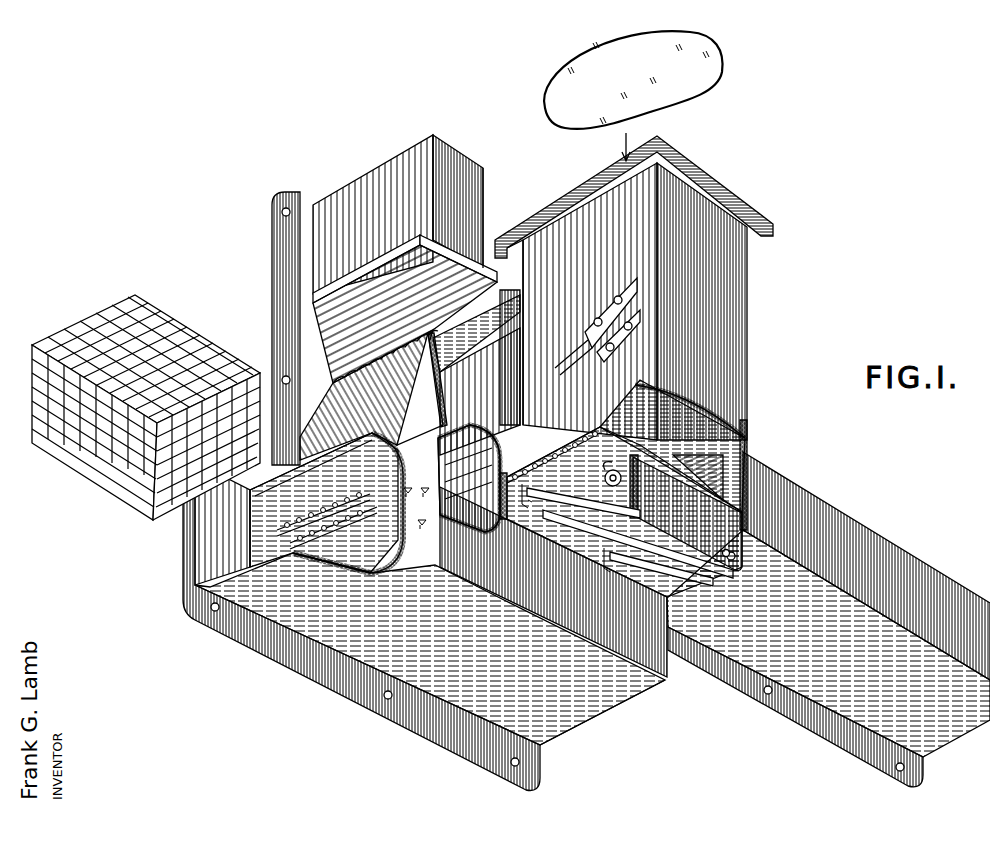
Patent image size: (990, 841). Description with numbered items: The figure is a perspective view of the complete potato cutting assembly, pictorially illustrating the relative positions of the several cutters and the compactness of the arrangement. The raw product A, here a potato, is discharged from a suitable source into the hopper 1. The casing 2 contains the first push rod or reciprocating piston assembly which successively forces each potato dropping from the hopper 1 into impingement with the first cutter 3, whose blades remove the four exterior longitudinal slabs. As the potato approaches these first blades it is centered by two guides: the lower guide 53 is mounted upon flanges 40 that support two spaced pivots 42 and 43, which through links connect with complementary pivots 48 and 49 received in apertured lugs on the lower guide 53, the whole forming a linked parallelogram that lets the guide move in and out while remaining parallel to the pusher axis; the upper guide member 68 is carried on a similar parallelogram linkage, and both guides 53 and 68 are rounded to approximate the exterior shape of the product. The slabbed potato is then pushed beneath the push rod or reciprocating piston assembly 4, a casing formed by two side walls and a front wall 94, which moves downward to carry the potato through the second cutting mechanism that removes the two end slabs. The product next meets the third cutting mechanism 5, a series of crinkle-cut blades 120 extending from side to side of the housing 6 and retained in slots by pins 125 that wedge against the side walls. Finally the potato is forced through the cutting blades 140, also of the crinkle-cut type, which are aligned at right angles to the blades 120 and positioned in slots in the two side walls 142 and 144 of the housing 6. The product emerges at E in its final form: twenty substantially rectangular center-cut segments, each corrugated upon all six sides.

The hopper 1 is at (760, 310).
The casing 2 is at (868, 511).
The first cutter 3 is at (555, 365).
The push rod or reciprocating piston assembly 4 is at (372, 166).
The third cutting mechanism 5 is at (466, 405).
The housing 6 is at (635, 710).
The flanges 40 is at (735, 555).
The pin or pivot 42 is at (605, 522).
The pin or pivot 43 is at (680, 575).
The pivot 48 is at (562, 502).
The pivot / lug 49 is at (668, 510).
The lower guide 53 is at (600, 481).
The upper guide member 68 is at (672, 446).
The front wall 94 is at (480, 185).
The blades 120 is at (469, 478).
The pins 125 is at (428, 526).
The cutting blades 140 is at (338, 520).
The side wall 142 is at (300, 588).
The side wall 144 is at (300, 501).
The raw product (potato) A is at (712, 72).
The final product E is at (166, 296).